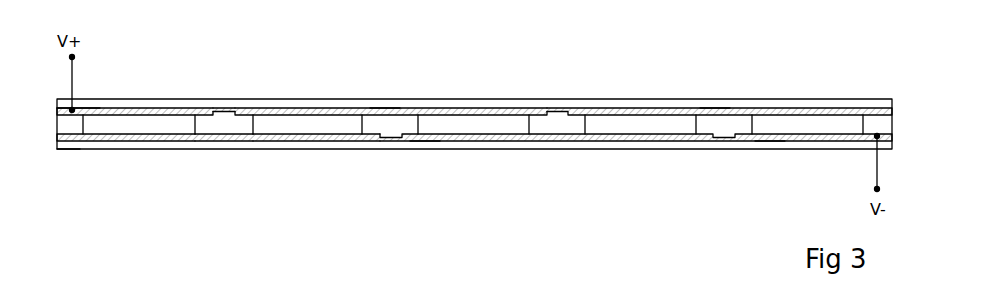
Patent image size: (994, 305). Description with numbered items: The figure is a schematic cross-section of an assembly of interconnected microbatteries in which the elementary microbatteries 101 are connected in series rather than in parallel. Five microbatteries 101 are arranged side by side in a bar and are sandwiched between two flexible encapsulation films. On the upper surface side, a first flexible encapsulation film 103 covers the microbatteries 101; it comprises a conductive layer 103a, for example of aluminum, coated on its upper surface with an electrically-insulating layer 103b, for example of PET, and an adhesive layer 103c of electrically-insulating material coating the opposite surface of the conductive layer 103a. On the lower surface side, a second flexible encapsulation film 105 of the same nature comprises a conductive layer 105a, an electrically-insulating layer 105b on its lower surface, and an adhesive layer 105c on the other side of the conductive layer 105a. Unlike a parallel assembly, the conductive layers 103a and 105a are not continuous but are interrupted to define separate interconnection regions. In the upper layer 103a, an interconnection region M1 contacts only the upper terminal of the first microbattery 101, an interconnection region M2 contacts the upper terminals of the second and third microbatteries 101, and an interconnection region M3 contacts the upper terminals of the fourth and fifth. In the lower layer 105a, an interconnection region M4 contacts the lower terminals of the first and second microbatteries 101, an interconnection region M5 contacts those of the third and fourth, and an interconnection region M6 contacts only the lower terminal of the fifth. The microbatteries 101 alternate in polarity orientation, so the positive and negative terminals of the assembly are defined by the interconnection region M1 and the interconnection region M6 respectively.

The microbatteries 101 is at (112, 141).
The first flexible encapsulation film 103 is at (474, 66).
The conductive layer 103a is at (160, 108).
The electrically-insulating layer 103b is at (210, 108).
The adhesive layer 103c is at (386, 83).
The second flexible encapsulation film 105 is at (474, 191).
The conductive layer 105a is at (168, 141).
The electrically-insulating layer 105b is at (205, 149).
The adhesive layer 105c is at (305, 175).
The interconnection region M1 is at (100, 108).
The interconnection region M2 is at (388, 108).
The interconnection region M3 is at (712, 108).
The interconnection region M4 is at (63, 149).
The interconnection region M5 is at (425, 141).
The interconnection region M6 is at (768, 141).